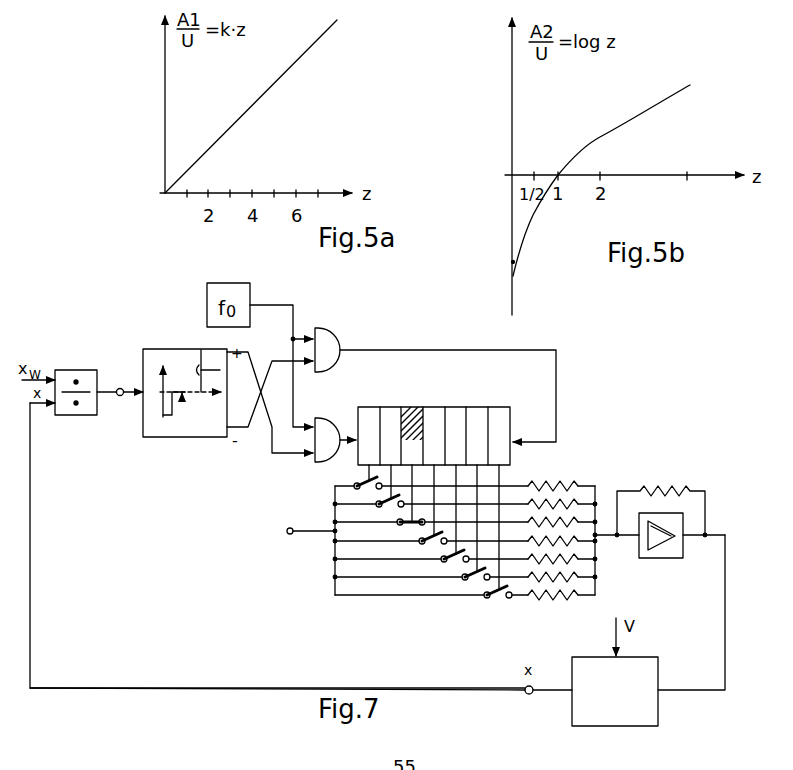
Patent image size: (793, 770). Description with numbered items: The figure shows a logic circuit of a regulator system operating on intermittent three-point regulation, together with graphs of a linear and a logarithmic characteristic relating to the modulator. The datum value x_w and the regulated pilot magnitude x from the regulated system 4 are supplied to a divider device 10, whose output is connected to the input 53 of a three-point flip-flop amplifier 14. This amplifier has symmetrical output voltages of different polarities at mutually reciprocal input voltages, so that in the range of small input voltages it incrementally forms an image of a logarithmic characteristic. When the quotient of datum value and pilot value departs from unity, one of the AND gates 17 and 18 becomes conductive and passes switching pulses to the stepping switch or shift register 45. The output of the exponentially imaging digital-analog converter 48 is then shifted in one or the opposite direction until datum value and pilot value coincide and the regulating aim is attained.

The divider device 10 is at (70, 370).
The input 53 is at (120, 396).
The three-point flip-flop amplifier 14 is at (168, 438).
The AND gate 18 is at (333, 328).
The AND gate 17 is at (323, 464).
The stepping switch or shift register 45 is at (409, 407).
The digital-analog converter 48 is at (636, 601).
The regulated system 4 is at (620, 727).